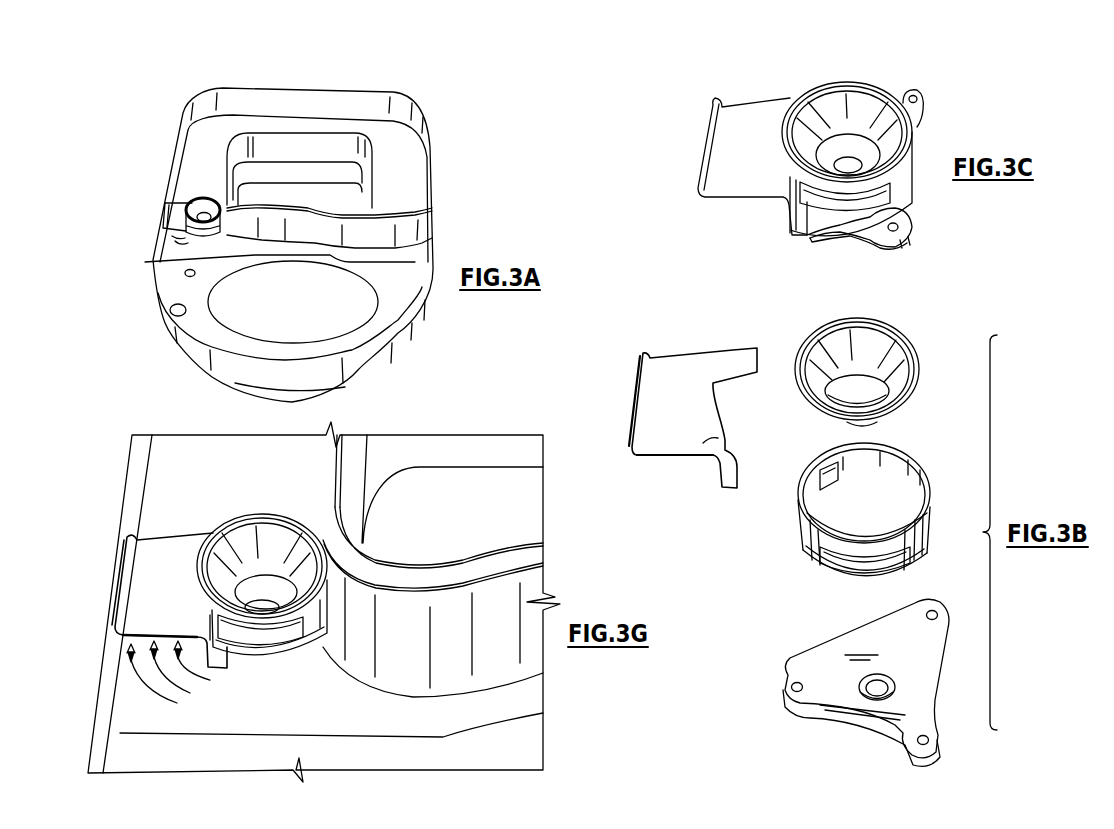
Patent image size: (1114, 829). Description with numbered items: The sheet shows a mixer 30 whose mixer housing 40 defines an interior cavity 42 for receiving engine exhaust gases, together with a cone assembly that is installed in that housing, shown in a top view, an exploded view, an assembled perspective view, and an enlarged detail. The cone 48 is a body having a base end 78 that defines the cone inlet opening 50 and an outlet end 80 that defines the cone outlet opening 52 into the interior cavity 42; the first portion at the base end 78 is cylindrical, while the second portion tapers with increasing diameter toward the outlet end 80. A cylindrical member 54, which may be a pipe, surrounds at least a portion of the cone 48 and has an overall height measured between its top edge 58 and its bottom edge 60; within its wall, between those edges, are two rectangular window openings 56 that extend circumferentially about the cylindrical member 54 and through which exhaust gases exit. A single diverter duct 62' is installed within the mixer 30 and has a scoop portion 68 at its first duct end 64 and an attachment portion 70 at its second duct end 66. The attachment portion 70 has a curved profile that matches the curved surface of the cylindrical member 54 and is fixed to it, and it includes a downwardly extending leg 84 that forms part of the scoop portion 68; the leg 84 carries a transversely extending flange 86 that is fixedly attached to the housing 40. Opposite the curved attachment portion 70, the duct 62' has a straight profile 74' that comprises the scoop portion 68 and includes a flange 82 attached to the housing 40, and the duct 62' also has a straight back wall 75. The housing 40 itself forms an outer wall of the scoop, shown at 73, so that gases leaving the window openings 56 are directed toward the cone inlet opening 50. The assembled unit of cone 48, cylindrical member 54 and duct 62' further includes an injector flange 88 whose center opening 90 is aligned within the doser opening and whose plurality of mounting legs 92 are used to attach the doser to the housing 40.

In FIG. 3A, the mixer 30 is at (480, 124).
In FIG. 3A, the mixer housing 40 is at (425, 108).
In FIG. 3G, the mixer housing 40 is at (131, 480).
In FIG. 3A, the interior cavity 42 is at (405, 193).
In FIG. 3A, the cone 48 is at (200, 205).
In FIG. 3C, the cone 48 is at (850, 118).
In FIG. 3B, the cone 48 is at (862, 342).
In FIG. 3G, the cone 48 is at (235, 543).
In FIG. 3B, the cone inlet opening 50 is at (873, 398).
In FIG. 3B, the cone outlet opening 52 is at (846, 318).
In FIG. 3A, the cylindrical member 54 is at (208, 236).
In FIG. 3C, the cylindrical member 54 is at (851, 184).
In FIG. 3B, the cylindrical member 54 is at (935, 530).
In FIG. 3G, the cylindrical member 54 is at (258, 655).
In FIG. 3B, the window openings 56 is at (823, 482).
In FIG. 3G, the window openings 56 is at (287, 633).
In FIG. 3B, the top edge 58 is at (913, 447).
In FIG. 3B, the bottom edge 60 is at (868, 587).
In FIG. 3A, the diverter duct 62' is at (155, 222).
In FIG. 3C, the diverter duct 62' is at (752, 147).
In FIG. 3B, the diverter duct 62' is at (711, 418).
In FIG. 3G, the diverter duct 62' is at (143, 600).
In FIG. 3C, the first duct end 64 is at (728, 202).
In FIG. 3B, the first duct end 64 is at (657, 458).
In FIG. 3G, the first duct end 64 is at (138, 638).
In FIG. 3B, the second duct end 66 is at (758, 355).
In FIG. 3B, the scoop portion 68 is at (707, 438).
In FIG. 3B, the attachment portion 70 is at (715, 397).
In FIG. 3G, the attachment portion 70 is at (198, 577).
In FIG. 3G, the outer wall of the scoop 73 is at (115, 557).
In FIG. 3B, the straight profile 74' is at (615, 401).
In FIG. 3B, the straight back wall 75 is at (693, 357).
In FIG. 3G, the straight back wall 75 is at (172, 533).
In FIG. 3B, the base end 78 is at (866, 428).
In FIG. 3B, the outlet end 80 is at (818, 338).
In FIG. 3B, the flange 82 is at (643, 355).
In FIG. 3G, the flange 82 is at (117, 590).
In FIG. 3C, the downwardly extending leg 84 is at (787, 217).
In FIG. 3B, the downwardly extending leg 84 is at (717, 470).
In FIG. 3B, the transversely extending flange 86 is at (738, 478).
In FIG. 3G, the transversely extending flange 86 is at (227, 667).
In FIG. 3C, the injector flange 88 is at (833, 230).
In FIG. 3B, the injector flange 88 is at (853, 655).
In FIG. 3B, the center opening 90 is at (872, 688).
In FIG. 3C, the mounting legs 92 is at (918, 100).
In FIG. 3B, the mounting legs 92 is at (940, 602).